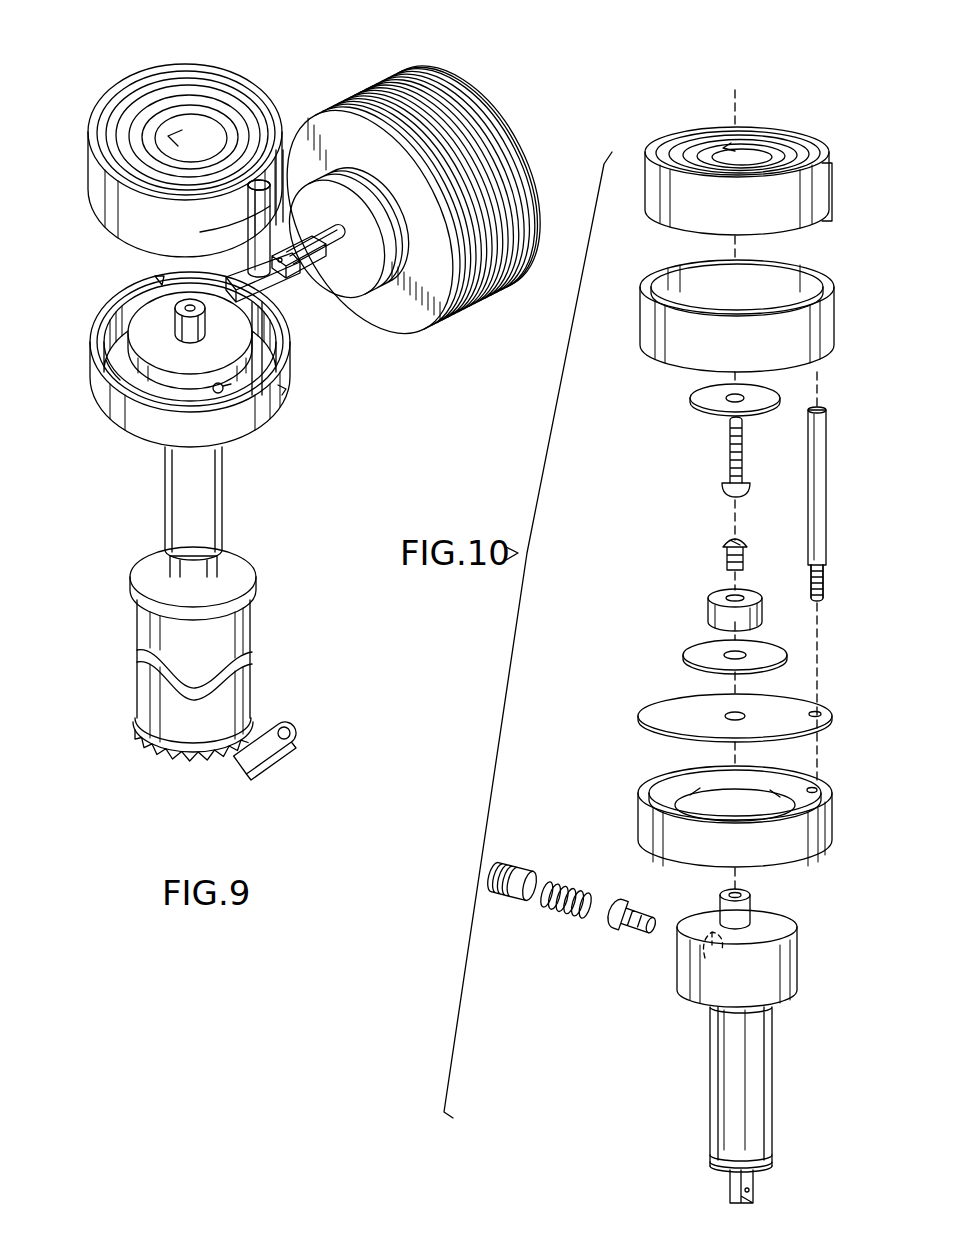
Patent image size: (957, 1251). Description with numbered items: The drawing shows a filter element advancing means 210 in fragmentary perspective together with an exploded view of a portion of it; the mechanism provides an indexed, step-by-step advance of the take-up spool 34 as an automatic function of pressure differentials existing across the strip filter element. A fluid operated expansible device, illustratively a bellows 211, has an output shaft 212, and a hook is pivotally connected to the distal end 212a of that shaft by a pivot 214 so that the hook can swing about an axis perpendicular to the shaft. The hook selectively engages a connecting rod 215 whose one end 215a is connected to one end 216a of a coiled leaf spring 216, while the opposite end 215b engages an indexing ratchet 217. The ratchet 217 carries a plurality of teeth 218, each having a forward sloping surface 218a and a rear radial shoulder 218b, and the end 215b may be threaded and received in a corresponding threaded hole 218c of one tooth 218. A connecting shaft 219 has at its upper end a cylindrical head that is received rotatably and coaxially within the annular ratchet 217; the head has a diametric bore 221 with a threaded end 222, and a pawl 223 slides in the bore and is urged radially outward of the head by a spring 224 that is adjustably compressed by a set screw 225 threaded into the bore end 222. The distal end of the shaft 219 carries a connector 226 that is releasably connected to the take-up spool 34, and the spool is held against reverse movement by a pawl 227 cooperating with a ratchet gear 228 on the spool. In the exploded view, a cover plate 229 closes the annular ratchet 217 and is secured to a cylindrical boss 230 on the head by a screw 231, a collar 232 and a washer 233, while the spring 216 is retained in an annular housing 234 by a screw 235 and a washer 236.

In FIG. 9, the take-up spool 34 is at (247, 677).
In FIG. 9, the filter element advancing means 210 is at (503, 78).
In FIG. 9, the bellows 211 is at (518, 142).
In FIG. 9, the output shaft 212 is at (330, 282).
In FIG. 9, the distal end 212a is at (328, 287).
In FIG. 9, the pivot 214 is at (326, 180).
In FIG. 9, the connecting rod 215 is at (248, 266).
In FIG. 10, the connecting rod 215 is at (828, 492).
In FIG. 9, the one end 215a is at (270, 180).
In FIG. 9, the opposite end 215b is at (284, 389).
In FIG. 10, the opposite end 215b is at (828, 592).
In FIG. 9, the coiled leaf spring 216 is at (150, 84).
In FIG. 10, the coiled leaf spring 216 is at (783, 130).
In FIG. 9, the one end 216a is at (230, 222).
In FIG. 9, the indexing ratchet 217 is at (138, 392).
In FIG. 10, the indexing ratchet 217 is at (785, 795).
In FIG. 9, the teeth 218 is at (118, 342).
In FIG. 9, the forward sloping surface 218a is at (112, 362).
In FIG. 9, the rear radial shoulder 218b is at (160, 278).
In FIG. 10, the threaded hole 218c is at (818, 791).
In FIG. 10, the connecting shaft 219 is at (723, 1083).
In FIG. 10, the diametric bore 221 is at (803, 948).
In FIG. 10, the threaded end 222 is at (706, 927).
In FIG. 9, the pawl 223 is at (224, 396).
In FIG. 10, the pawl 223 is at (630, 936).
In FIG. 10, the spring 224 is at (560, 915).
In FIG. 10, the set screw 225 is at (525, 868).
In FIG. 10, the connector 226 is at (755, 1186).
In FIG. 9, the pawl 227 is at (278, 762).
In FIG. 9, the ratchet gear 228 is at (192, 768).
In FIG. 10, the cover plate 229 is at (662, 720).
In FIG. 10, the cylindrical boss 230 is at (757, 900).
In FIG. 10, the screw 231 is at (722, 547).
In FIG. 10, the collar 232 is at (706, 600).
In FIG. 10, the washer 233 is at (692, 657).
In FIG. 10, the annular housing 234 is at (682, 360).
In FIG. 10, the screw 235 is at (722, 468).
In FIG. 10, the washer 236 is at (690, 408).